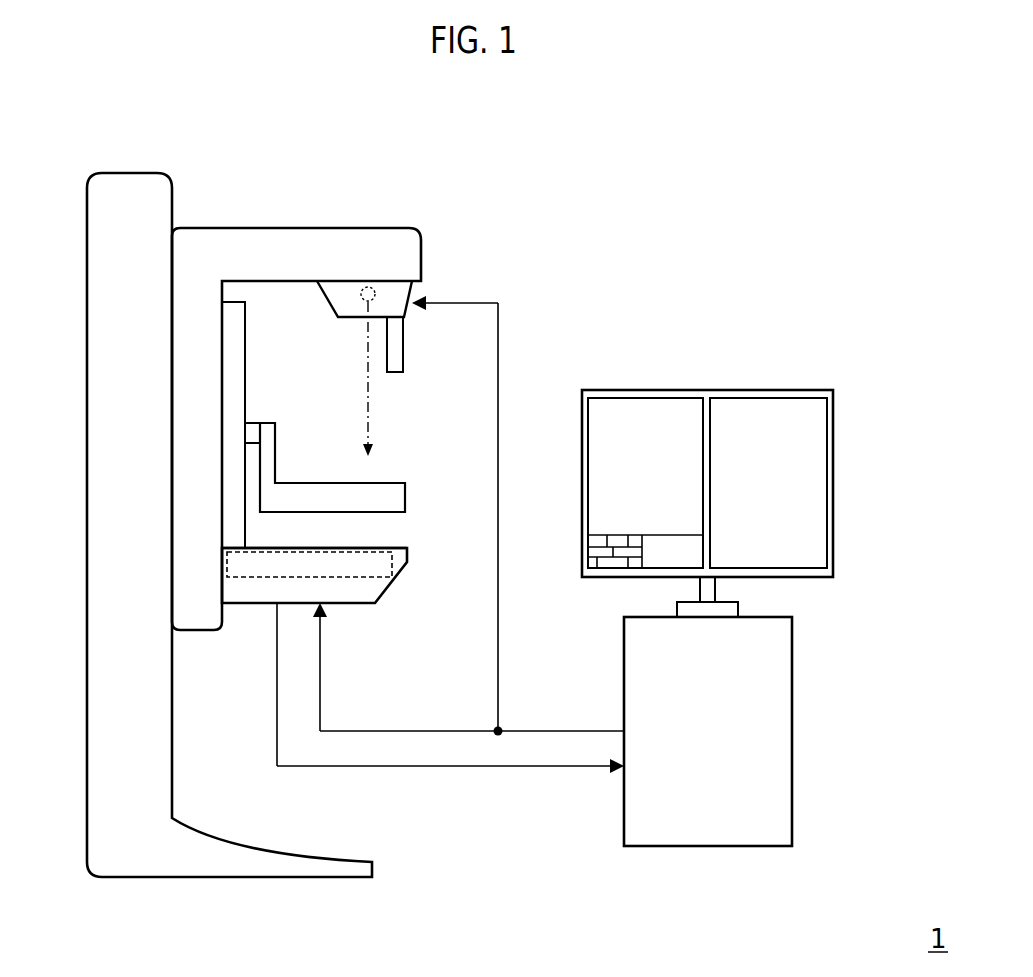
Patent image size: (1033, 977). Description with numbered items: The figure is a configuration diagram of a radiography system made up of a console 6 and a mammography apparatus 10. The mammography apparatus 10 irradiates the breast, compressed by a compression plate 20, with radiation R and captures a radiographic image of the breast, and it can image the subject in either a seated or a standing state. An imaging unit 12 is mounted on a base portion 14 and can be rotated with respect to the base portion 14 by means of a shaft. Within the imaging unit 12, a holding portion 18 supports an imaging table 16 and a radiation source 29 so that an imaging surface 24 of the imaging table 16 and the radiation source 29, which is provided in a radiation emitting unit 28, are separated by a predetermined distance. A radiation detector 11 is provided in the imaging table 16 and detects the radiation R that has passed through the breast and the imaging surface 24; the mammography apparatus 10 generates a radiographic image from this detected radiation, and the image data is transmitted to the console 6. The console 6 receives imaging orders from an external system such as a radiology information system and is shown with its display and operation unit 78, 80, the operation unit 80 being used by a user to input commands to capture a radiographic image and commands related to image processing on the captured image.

The mammography apparatus 10 is at (257, 140).
The imaging unit 12 is at (200, 229).
The base portion 14 is at (87, 313).
The radiation emitting unit 28 is at (322, 296).
The radiation source 29 is at (377, 295).
The holding portion 18 is at (246, 366).
The compression plate 20 is at (312, 456).
The imaging table 16 is at (350, 604).
The imaging surface 24 is at (392, 545).
The radiation detector 11 is at (253, 578).
The console 6 is at (713, 368).
The display 78 is at (731, 456).
The operation unit 80 is at (800, 390).